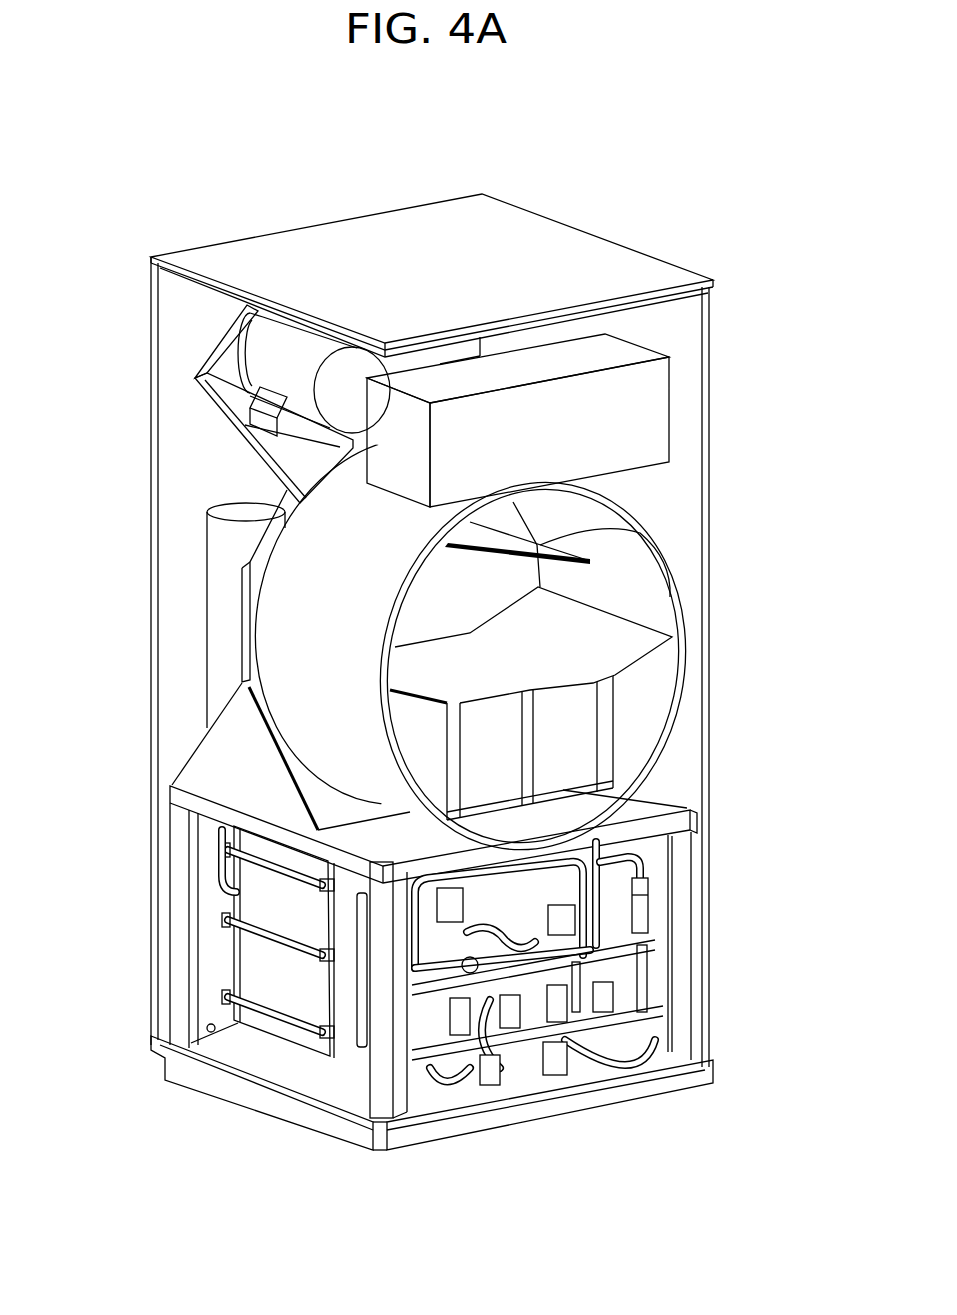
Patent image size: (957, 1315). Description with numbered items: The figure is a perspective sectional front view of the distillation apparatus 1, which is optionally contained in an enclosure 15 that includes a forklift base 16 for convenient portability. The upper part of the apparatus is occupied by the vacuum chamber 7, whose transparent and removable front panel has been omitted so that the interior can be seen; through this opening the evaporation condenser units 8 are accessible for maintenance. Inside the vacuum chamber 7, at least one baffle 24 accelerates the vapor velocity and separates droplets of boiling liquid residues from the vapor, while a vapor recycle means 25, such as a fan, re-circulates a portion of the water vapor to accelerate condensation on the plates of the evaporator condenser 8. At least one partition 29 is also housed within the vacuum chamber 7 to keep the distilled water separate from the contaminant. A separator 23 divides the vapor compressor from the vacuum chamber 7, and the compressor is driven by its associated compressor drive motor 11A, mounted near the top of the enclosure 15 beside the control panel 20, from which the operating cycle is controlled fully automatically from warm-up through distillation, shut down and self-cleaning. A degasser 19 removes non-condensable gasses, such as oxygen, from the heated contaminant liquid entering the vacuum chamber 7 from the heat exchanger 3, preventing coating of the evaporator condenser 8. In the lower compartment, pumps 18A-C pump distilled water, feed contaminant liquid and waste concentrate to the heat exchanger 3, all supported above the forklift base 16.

The distillation apparatus 1 is at (289, 190).
The heat exchanger 3 is at (252, 969).
The vacuum chamber 7 is at (240, 605).
The evaporation condenser units 8 is at (651, 745).
The compressor drive motor 11A is at (258, 365).
The enclosure 15 is at (709, 714).
The forklift base 16 is at (388, 1165).
The pumps 18A-C is at (614, 913).
The degasser 19 is at (240, 503).
The control panel 20 is at (672, 400).
The separator 23 is at (436, 601).
The baffle 24 is at (638, 533).
The vapor recycle means 25 is at (416, 730).
The partition 29 is at (620, 630).